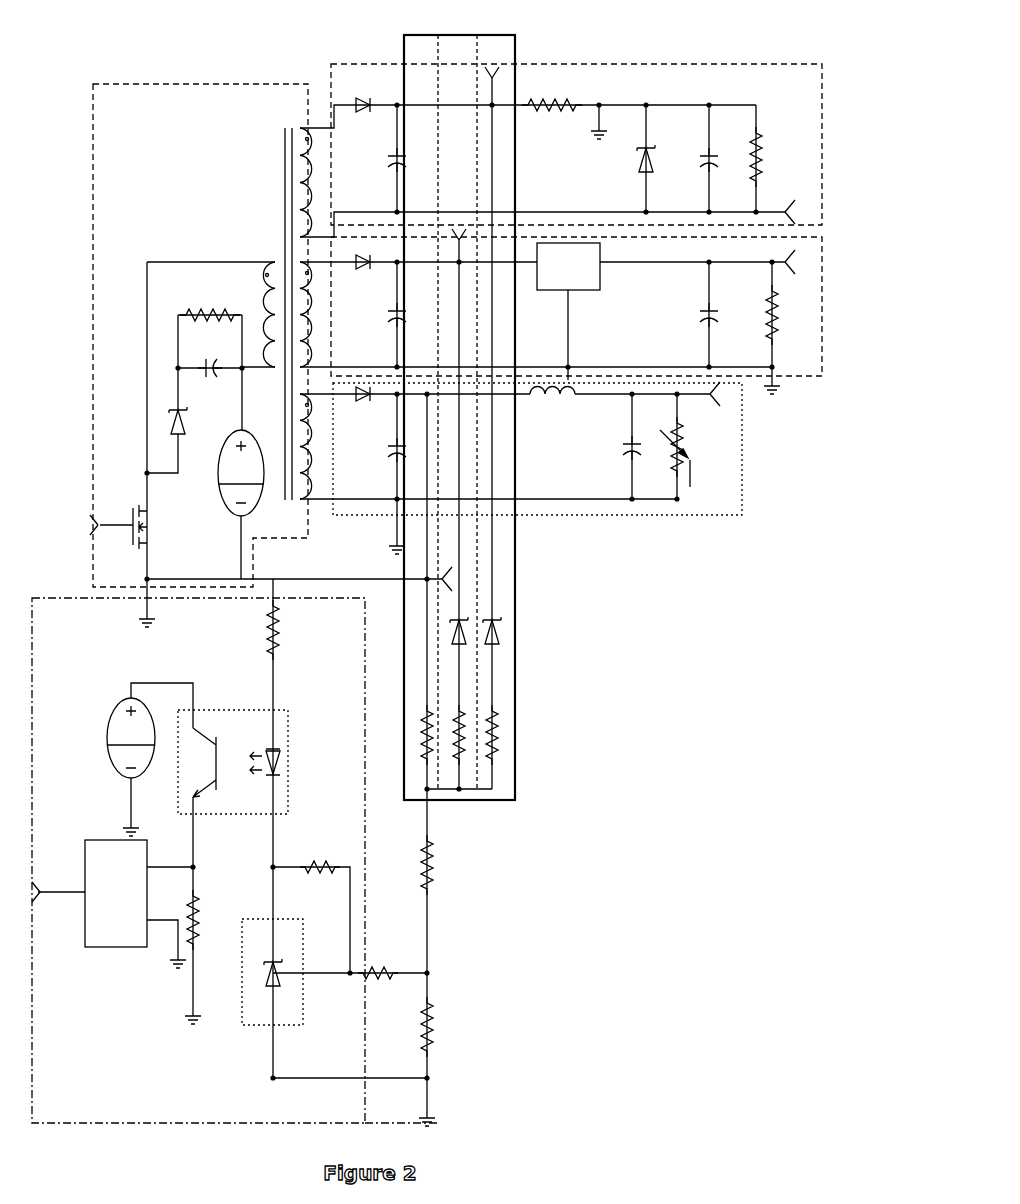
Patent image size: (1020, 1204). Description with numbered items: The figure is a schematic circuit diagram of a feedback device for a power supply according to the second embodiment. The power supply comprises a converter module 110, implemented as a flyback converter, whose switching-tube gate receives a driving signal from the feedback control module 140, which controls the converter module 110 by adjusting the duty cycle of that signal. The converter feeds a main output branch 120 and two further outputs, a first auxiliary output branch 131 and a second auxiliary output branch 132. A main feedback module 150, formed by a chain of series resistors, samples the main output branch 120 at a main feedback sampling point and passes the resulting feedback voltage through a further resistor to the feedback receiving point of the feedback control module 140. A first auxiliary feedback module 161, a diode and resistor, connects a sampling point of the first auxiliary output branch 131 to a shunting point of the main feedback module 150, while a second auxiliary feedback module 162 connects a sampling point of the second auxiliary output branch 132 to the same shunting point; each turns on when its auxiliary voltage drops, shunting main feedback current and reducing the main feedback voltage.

The converter module 110 is at (262, 355).
The main output branch 120 is at (668, 522).
The first auxiliary output branch 131 is at (808, 384).
The second auxiliary output branch 132 is at (740, 61).
The feedback control module 140 is at (234, 851).
The main feedback module 150 is at (386, 900).
The first auxiliary feedback module 161 is at (465, 780).
The second auxiliary feedback module 162 is at (506, 758).